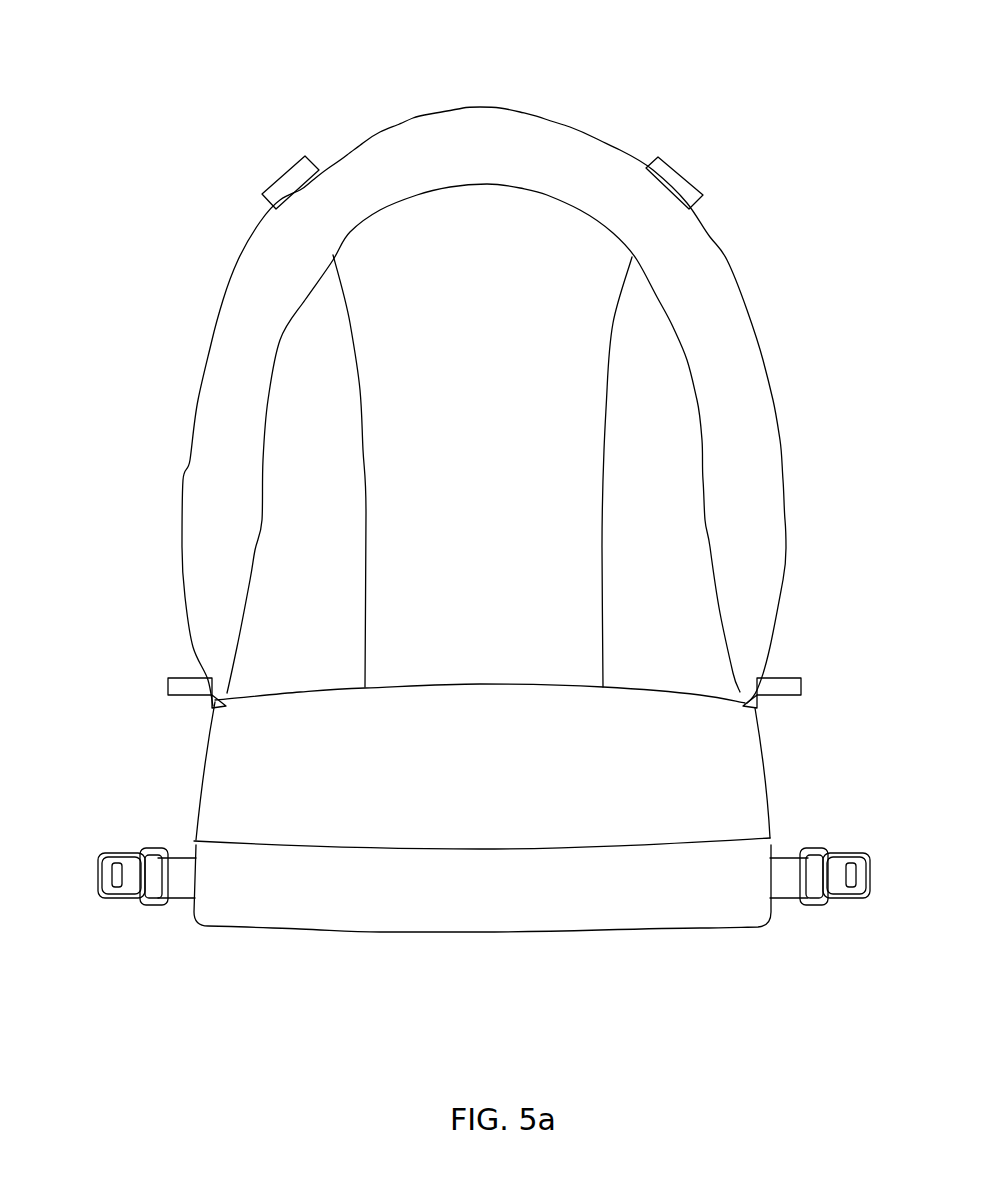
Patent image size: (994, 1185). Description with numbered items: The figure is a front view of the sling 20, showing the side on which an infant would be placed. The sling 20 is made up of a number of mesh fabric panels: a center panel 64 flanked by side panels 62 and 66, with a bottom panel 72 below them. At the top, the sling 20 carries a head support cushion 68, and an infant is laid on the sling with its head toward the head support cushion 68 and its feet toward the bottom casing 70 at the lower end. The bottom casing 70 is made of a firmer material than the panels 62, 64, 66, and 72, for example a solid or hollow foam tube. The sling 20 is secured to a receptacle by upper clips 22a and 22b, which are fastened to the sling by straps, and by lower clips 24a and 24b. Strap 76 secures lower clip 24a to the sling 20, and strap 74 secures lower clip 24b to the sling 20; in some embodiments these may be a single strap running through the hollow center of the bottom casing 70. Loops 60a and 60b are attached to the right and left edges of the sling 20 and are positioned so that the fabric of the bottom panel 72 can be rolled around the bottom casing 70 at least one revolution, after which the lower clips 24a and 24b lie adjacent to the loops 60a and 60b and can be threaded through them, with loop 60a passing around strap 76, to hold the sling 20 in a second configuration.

The sling 20 is at (153, 353).
The upper clip 22a is at (678, 180).
The upper clip 22b is at (293, 175).
The lower left clip 24a is at (855, 900).
The lower right clip 24b is at (120, 900).
The loop 60a is at (790, 682).
The loop 60b is at (178, 682).
The side panel 62 is at (305, 300).
The center panel 64 is at (547, 358).
The side panel 66 is at (672, 468).
The head support cushion 68 is at (473, 153).
The bottom casing 70 is at (473, 897).
The bottom panel 72 is at (650, 758).
The strap 74 is at (182, 865).
The strap 76 is at (785, 887).